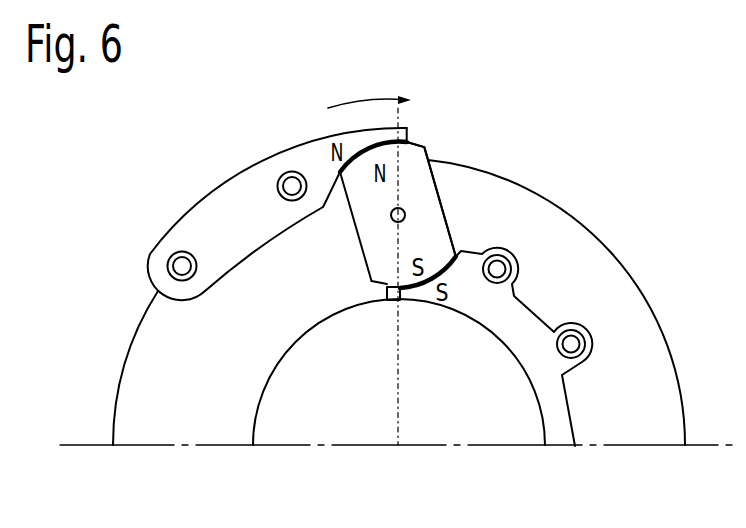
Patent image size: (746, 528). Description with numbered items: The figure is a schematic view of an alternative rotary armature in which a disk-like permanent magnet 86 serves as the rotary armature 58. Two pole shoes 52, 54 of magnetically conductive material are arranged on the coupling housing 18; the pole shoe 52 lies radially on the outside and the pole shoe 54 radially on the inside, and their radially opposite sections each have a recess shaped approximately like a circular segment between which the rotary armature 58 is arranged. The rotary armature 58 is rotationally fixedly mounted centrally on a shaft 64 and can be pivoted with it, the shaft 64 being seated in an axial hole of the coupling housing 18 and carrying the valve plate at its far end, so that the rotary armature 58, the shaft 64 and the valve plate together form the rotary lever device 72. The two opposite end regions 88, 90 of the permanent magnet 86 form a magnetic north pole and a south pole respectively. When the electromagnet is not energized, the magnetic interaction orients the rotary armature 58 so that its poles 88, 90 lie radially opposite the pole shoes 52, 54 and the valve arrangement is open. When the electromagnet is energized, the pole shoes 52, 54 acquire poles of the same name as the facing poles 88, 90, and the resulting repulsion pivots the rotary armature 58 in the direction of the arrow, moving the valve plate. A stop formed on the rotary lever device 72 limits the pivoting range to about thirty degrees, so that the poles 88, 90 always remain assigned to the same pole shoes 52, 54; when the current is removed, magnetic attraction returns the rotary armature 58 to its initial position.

The coupling housing 18 is at (421, 302).
The pole shoe 52 is at (232, 202).
The pole shoe 54 is at (557, 433).
The rotary armature 58 is at (433, 212).
The shaft 64 is at (391, 219).
The rotary lever device 72 is at (364, 82).
The permanent magnet 86 is at (458, 128).
The end region 88 is at (413, 158).
The end region 90 is at (380, 277).